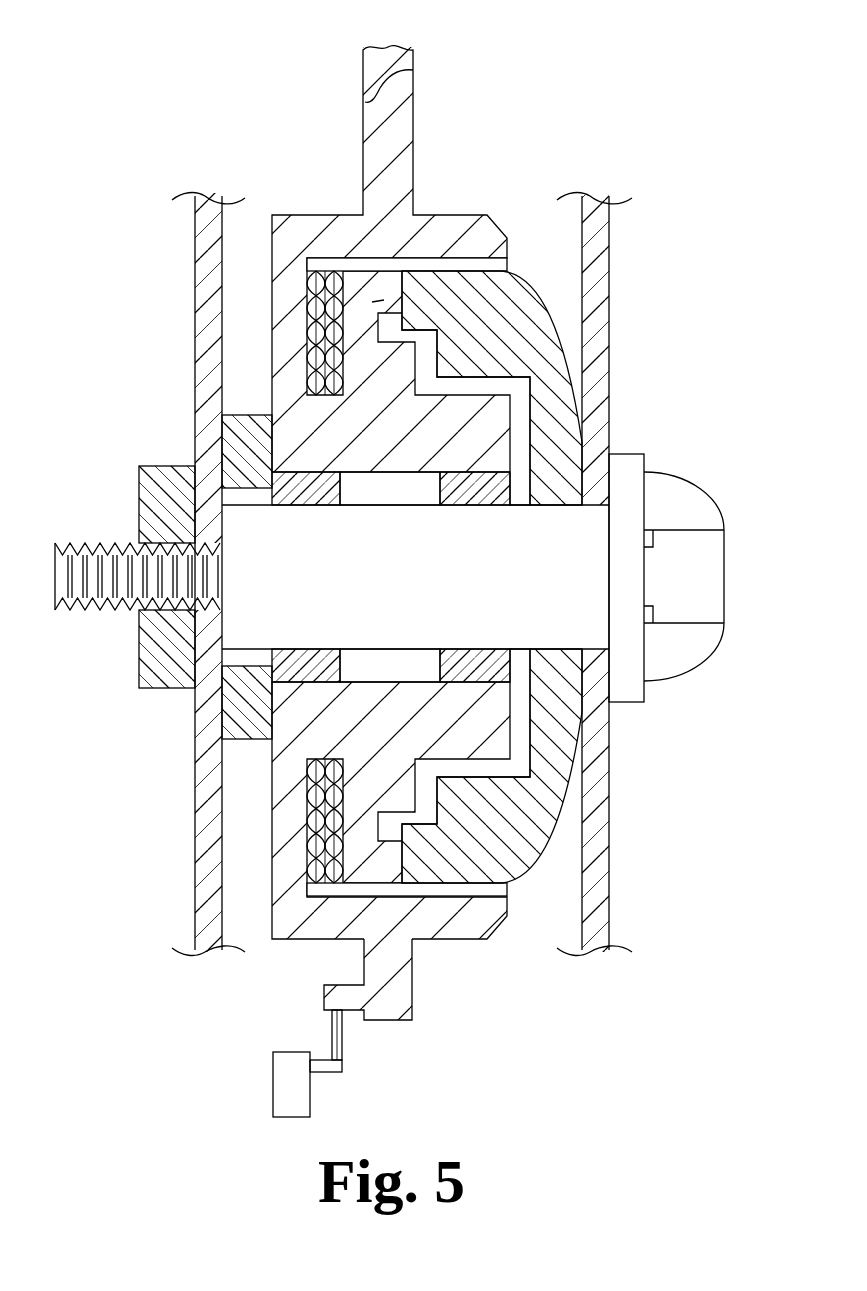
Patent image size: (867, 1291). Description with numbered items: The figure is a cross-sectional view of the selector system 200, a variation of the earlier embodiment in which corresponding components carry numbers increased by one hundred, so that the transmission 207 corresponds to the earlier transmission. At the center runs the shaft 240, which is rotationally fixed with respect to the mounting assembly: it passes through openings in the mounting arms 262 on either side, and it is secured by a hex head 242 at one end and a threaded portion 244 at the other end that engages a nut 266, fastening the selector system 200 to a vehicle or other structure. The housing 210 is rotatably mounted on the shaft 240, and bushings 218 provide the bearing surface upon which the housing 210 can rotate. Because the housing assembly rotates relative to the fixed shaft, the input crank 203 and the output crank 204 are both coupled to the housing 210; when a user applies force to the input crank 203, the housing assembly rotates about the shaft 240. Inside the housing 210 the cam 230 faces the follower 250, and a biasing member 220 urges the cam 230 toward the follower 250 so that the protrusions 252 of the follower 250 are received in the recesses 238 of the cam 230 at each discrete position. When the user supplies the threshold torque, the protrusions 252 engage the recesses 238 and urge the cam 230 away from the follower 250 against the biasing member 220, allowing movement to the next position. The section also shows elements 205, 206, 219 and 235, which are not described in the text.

The selector system 200 is at (404, 560).
The input crank 203 is at (413, 78).
The output crank 204 is at (345, 985).
The pin 205 is at (332, 1030).
The bracket 206 is at (343, 1066).
The transmission 207 is at (273, 1096).
The housing 210 is at (284, 186).
The bushings 218 is at (238, 438).
The retainer plate 219 is at (320, 258).
The biasing member 220 is at (312, 293).
The cam 230 is at (362, 773).
The retainer plate 235 is at (390, 828).
The recesses 238 is at (362, 301).
The shaft 240 is at (553, 520).
The hex head 242 is at (702, 660).
The threaded portion 244 is at (84, 612).
The follower 250 is at (552, 270).
The protrusions 252 is at (372, 302).
The mounting arms 262 is at (605, 295).
The nut 266 is at (139, 490).